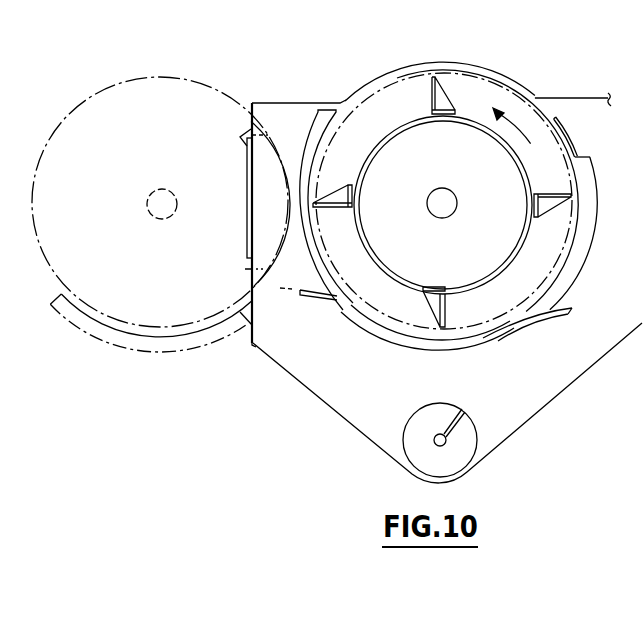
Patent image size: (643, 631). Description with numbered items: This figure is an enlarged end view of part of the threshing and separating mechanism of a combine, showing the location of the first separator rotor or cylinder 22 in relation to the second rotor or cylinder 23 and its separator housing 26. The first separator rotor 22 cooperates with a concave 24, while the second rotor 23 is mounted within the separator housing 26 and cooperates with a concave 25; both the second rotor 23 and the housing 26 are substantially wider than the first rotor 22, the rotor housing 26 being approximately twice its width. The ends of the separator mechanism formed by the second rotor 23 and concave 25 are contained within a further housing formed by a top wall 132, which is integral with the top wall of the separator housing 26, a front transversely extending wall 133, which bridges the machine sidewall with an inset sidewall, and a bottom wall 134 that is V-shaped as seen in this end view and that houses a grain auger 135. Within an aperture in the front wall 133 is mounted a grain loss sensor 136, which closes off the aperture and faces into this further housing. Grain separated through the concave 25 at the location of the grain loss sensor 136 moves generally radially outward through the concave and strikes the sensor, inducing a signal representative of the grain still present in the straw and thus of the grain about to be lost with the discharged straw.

The first separator rotor 22 is at (140, 77).
The second rotor 23 is at (476, 118).
The concave 24 is at (141, 343).
The concave 25 is at (372, 327).
The separator housing 26 is at (493, 70).
The top wall 132 is at (288, 103).
The front transversely extending wall 133 is at (250, 340).
The bottom wall 134 is at (312, 393).
The grain auger 135 is at (442, 412).
The grain loss sensor 136 is at (247, 182).